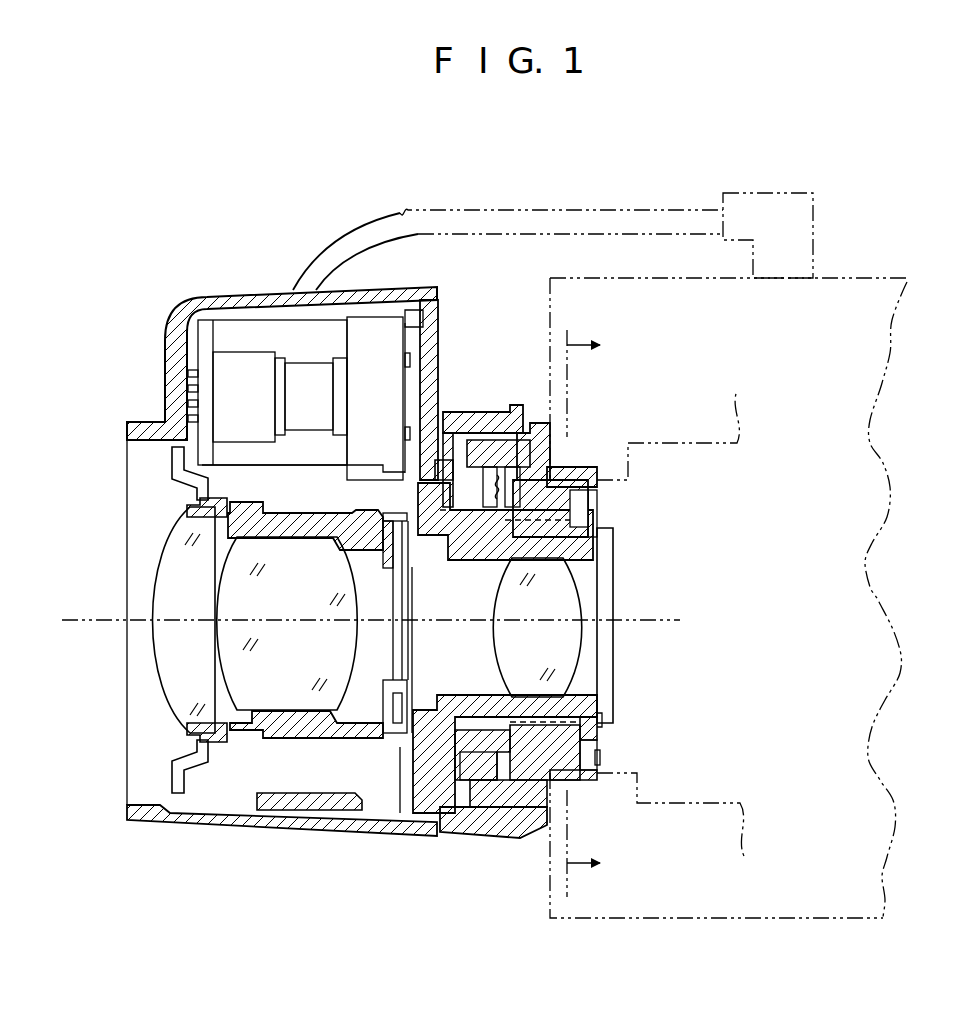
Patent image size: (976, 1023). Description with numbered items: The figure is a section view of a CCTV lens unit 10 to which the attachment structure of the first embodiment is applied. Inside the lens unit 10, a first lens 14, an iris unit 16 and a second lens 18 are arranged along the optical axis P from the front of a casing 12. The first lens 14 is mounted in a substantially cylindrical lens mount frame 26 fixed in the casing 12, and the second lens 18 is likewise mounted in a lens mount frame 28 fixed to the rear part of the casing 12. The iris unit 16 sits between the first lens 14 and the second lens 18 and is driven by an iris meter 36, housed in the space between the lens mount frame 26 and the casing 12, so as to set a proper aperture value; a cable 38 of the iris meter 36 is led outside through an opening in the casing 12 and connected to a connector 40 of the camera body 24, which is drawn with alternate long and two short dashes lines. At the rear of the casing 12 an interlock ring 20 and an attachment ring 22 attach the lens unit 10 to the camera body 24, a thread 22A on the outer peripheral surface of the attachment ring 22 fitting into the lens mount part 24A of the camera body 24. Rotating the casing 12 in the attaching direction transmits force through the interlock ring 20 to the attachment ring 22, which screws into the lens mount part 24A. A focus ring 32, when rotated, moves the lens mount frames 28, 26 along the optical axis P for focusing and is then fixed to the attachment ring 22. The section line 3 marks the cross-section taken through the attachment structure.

The CCTV lens unit 10 is at (140, 297).
The casing 12 is at (195, 297).
The first lens 14 is at (157, 680).
The iris unit 16 is at (414, 583).
The second lens 18 is at (585, 611).
The interlock ring 20 is at (600, 512).
The attachment ring 22 is at (537, 408).
The thread 22A is at (578, 477).
The camera body 24 is at (840, 279).
The lens mount part 24A is at (646, 470).
The lens mount frame 26 is at (292, 512).
The lens mount frame 28 is at (467, 694).
The focus ring 32 is at (467, 408).
The iris meter 36 is at (276, 322).
The cable 38 is at (345, 243).
The connector 40 is at (818, 218).
The optical axis P is at (80, 620).
The section line III-III 3 is at (598, 611).